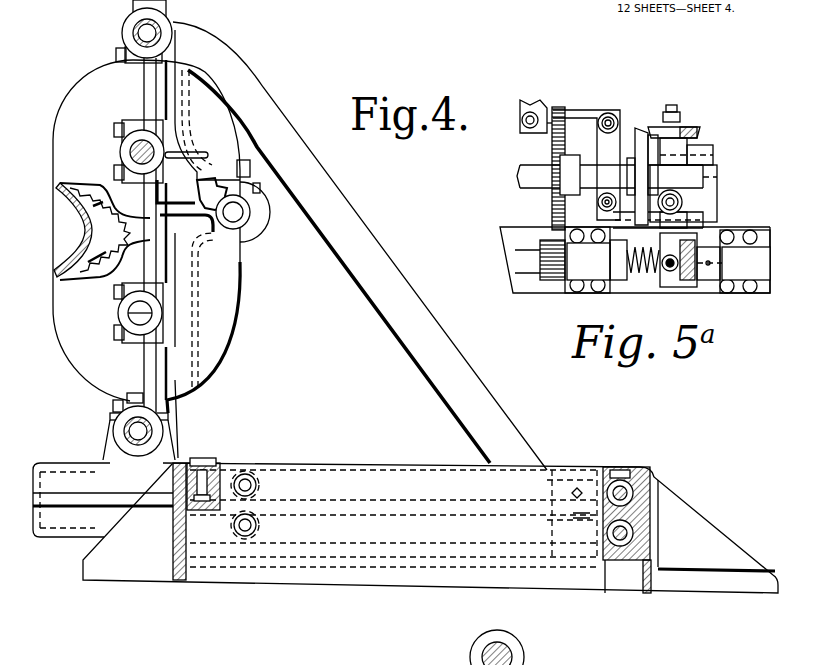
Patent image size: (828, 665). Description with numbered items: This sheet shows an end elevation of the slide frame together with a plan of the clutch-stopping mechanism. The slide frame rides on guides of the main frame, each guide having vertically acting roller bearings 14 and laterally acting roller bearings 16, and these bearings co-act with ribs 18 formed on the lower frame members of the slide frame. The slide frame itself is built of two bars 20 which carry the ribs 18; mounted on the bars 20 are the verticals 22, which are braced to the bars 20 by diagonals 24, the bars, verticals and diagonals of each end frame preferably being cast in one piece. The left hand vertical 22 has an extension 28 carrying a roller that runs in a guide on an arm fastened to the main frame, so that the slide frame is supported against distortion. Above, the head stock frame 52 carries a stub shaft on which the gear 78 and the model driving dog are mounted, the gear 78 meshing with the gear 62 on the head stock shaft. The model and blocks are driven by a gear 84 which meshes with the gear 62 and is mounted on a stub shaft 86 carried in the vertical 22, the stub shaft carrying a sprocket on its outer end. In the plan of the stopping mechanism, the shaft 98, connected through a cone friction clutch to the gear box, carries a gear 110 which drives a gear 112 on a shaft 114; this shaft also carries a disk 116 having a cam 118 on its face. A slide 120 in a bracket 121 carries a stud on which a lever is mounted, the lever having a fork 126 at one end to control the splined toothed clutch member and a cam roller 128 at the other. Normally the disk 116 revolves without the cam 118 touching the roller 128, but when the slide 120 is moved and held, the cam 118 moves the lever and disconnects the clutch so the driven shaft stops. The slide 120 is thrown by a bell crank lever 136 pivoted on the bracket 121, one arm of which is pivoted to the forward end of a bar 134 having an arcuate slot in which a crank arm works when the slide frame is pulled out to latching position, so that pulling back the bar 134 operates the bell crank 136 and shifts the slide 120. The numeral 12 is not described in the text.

In FIG. 4, the base 12 is at (443, 487).
In FIG. 4, the vertically acting roller bearings 14 is at (250, 483).
In FIG. 4, the laterally acting roller bearings 16 is at (197, 510).
In FIG. 4, the ribs 18 is at (77, 502).
In FIG. 4, the bars 20 is at (77, 478).
In FIG. 4, the verticals 22 is at (200, 290).
In FIG. 4, the diagonals 24 is at (397, 285).
In FIG. 4, the extension 28 is at (165, 13).
In FIG. 4, the head stock frame 52 is at (165, 100).
In FIG. 4, the gear 62 is at (73, 203).
In FIG. 4, the gear 78 is at (73, 253).
In FIG. 4, the gear 84 is at (223, 187).
In FIG. 4, the stub shaft 86 is at (237, 213).
In FIG. 5A, the shaft 98 is at (527, 260).
In FIG. 5A, the gear 110 is at (553, 277).
In FIG. 5A, the gear 112 is at (552, 203).
In FIG. 5A, the shaft 114 is at (520, 170).
In FIG. 5A, the disk 116 is at (643, 122).
In FIG. 5A, the cam 118 is at (650, 152).
In FIG. 5A, the slide 120 is at (703, 193).
In FIG. 5A, the bracket 121 is at (700, 152).
In FIG. 5A, the fork 126 is at (670, 273).
In FIG. 5A, the cam roller 128 is at (680, 133).
In FIG. 5A, the bar 134 is at (523, 112).
In FIG. 5A, the bell crank lever 136 is at (547, 130).